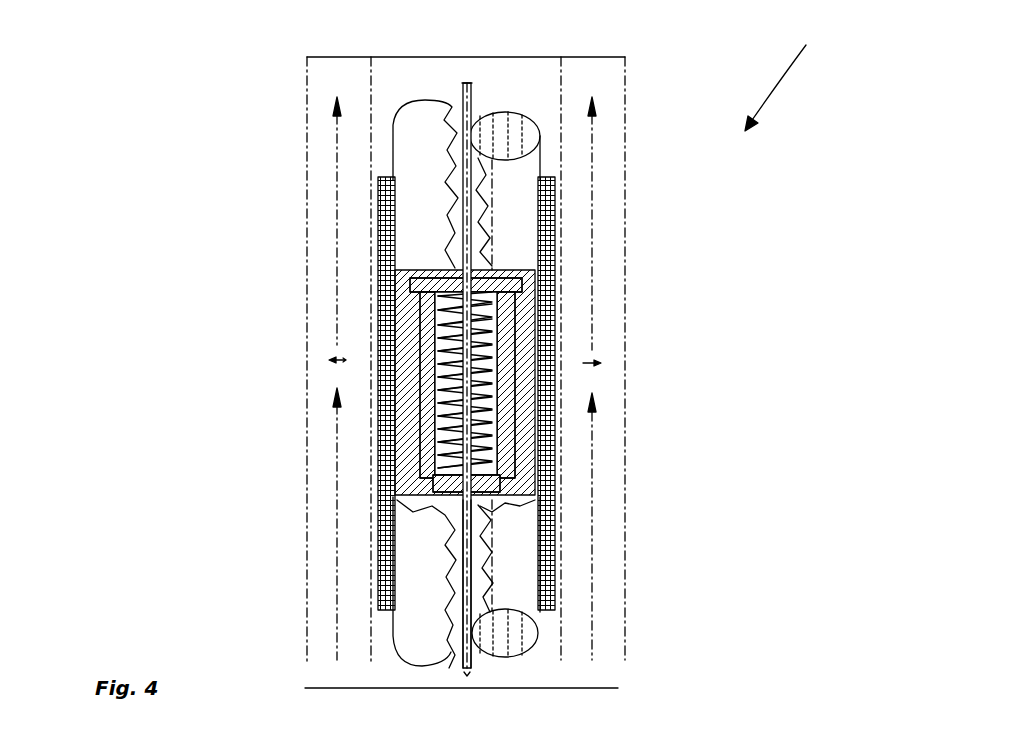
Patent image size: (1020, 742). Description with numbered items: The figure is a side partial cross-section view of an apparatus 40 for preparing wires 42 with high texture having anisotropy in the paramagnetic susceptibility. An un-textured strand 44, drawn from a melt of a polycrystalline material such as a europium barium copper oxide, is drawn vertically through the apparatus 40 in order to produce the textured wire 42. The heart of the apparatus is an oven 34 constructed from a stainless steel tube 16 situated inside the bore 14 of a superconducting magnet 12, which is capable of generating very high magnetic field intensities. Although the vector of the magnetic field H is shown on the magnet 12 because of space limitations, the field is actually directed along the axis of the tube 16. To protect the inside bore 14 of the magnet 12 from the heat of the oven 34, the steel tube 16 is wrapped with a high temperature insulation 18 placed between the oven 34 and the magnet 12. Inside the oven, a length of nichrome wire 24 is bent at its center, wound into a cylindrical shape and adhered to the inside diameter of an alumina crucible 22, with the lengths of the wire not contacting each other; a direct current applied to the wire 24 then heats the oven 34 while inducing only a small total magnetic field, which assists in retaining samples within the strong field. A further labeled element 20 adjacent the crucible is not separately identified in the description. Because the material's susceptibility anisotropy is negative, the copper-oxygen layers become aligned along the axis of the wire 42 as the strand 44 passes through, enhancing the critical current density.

The superconducting magnet 12 is at (608, 100).
The bore 14 is at (393, 65).
The stainless steel tube 16 is at (520, 545).
The high temperature insulation 18 is at (385, 287).
The block 20 is at (400, 405).
The alumina crucible 22 is at (513, 280).
The nichrome wire 24 is at (510, 310).
The oven 34 is at (400, 497).
The apparatus 40 is at (790, 72).
The textured wire 42 is at (470, 83).
The un-textured strand 44 is at (460, 547).